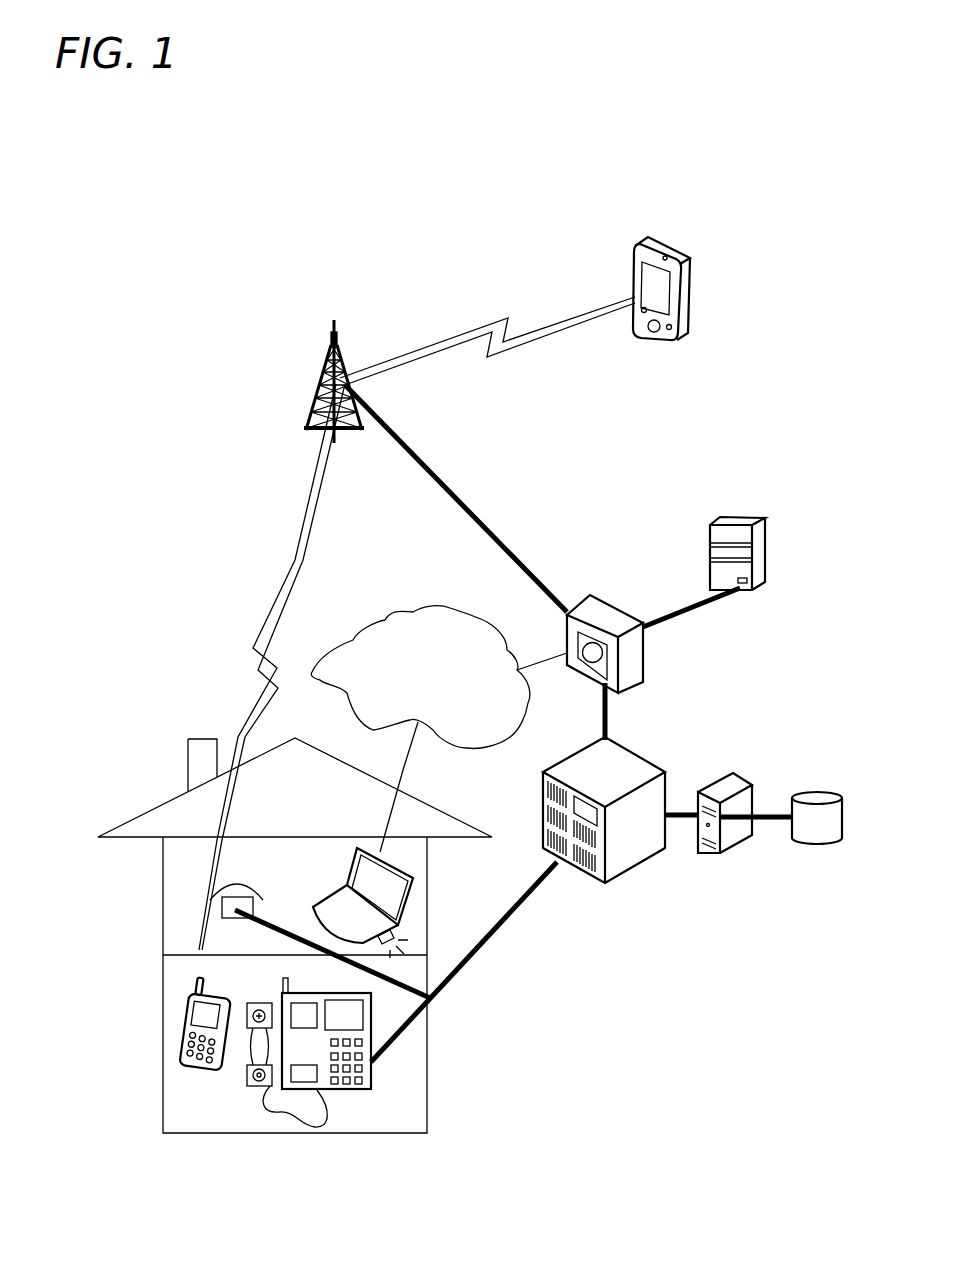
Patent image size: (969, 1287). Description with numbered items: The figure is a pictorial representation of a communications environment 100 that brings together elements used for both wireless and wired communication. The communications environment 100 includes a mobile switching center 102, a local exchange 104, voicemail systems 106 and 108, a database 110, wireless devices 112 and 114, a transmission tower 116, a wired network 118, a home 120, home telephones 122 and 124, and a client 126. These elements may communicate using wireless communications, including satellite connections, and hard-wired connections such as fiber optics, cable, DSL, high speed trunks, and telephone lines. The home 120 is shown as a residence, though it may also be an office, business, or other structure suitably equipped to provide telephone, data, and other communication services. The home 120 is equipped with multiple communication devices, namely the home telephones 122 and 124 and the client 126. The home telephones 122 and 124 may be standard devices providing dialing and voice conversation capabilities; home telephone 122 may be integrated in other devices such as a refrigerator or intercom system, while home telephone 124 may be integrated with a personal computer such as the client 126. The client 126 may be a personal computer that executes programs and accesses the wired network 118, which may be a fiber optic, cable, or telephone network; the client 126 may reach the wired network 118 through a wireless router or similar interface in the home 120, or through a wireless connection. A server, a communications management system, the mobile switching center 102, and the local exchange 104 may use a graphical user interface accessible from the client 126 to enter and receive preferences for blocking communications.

The communications environment 100 is at (129, 247).
The mobile switching center 102 is at (592, 596).
The local exchange 104 is at (608, 884).
The voicemail system 106 is at (752, 542).
The voicemail system 108 is at (745, 838).
The database 110 is at (797, 792).
The wireless device 112 is at (686, 257).
The wireless device 114 is at (187, 1058).
The transmission tower 116 is at (312, 408).
The wired network 118 is at (404, 703).
The home 120 is at (158, 793).
The home telephone 122 is at (222, 916).
The home telephone 124 is at (372, 1070).
The client 126 is at (413, 913).